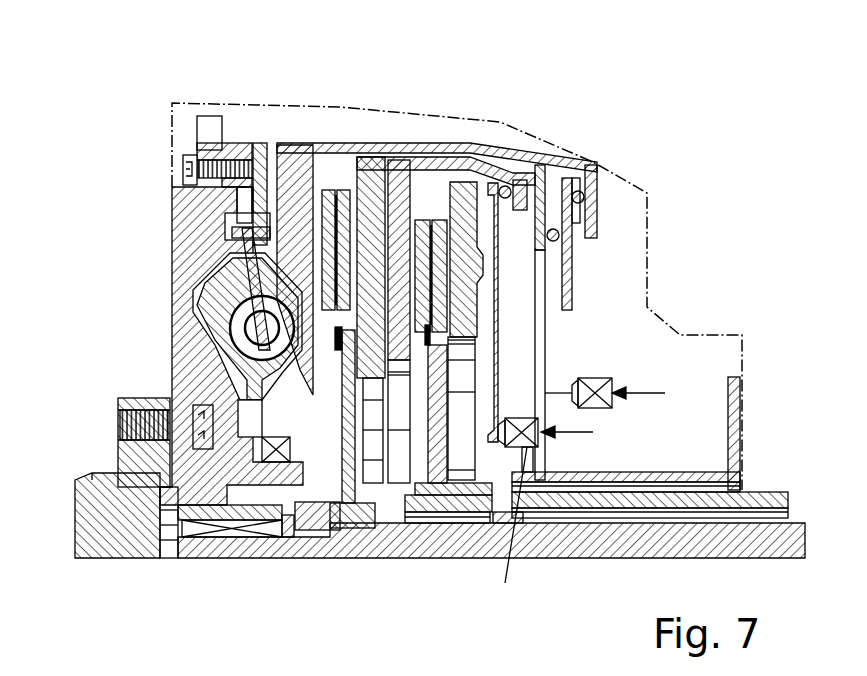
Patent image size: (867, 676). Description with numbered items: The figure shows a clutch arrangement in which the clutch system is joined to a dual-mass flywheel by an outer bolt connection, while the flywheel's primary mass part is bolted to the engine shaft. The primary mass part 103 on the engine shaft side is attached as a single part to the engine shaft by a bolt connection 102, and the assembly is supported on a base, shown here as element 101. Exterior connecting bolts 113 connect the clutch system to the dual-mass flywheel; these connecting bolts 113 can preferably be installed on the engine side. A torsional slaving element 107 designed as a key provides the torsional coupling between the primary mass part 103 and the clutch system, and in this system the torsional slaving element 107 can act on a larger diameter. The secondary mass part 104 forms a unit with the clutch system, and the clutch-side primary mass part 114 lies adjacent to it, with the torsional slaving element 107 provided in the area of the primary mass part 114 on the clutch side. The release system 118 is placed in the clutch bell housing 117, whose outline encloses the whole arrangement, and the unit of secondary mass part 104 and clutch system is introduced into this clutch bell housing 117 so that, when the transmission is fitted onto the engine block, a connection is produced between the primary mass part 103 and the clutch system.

The base / support 101 is at (92, 474).
The bolt connection 102 is at (150, 400).
The primary mass part 103 is at (173, 206).
The secondary mass part 104 is at (320, 167).
The torsional slaving element 107 is at (240, 197).
The connecting bolts 113 is at (210, 133).
The primary mass part 114 is at (270, 178).
The clutch bell housing 117 is at (647, 255).
The release system 118 is at (506, 540).